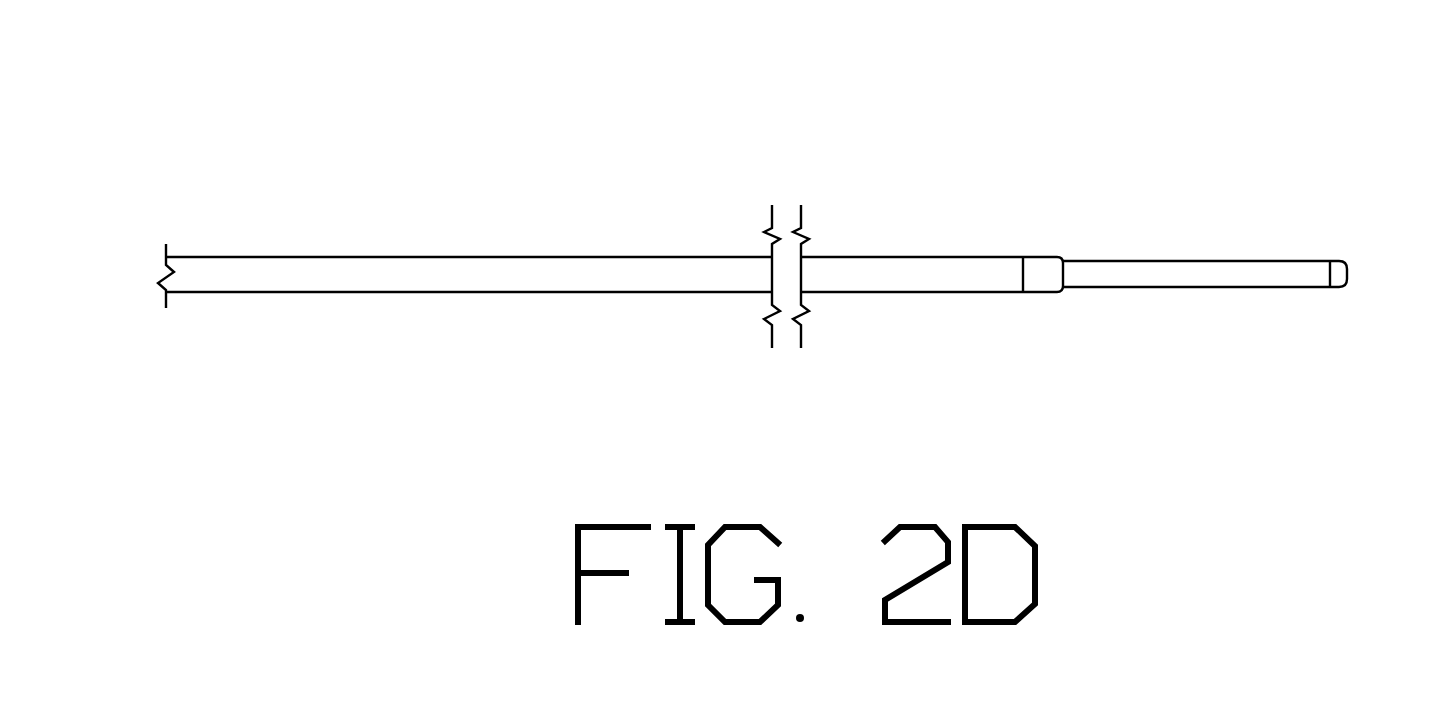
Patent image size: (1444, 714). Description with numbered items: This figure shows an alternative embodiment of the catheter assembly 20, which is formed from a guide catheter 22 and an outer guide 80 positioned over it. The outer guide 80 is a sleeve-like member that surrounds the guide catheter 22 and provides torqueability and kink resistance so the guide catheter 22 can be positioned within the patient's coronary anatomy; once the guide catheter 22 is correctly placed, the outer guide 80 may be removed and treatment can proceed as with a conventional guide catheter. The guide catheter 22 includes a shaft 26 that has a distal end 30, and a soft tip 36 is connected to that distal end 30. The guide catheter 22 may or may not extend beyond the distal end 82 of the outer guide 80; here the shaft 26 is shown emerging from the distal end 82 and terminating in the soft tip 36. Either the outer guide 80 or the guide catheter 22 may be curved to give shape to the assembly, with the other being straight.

The catheter assembly 20 is at (756, 196).
The outer guide 80 is at (590, 264).
The distal end of the outer guide 82 is at (962, 236).
The guide catheter 22 is at (1218, 269).
The shaft 26 is at (1196, 231).
The distal end 30 is at (1196, 325).
The soft tip 36 is at (1378, 311).